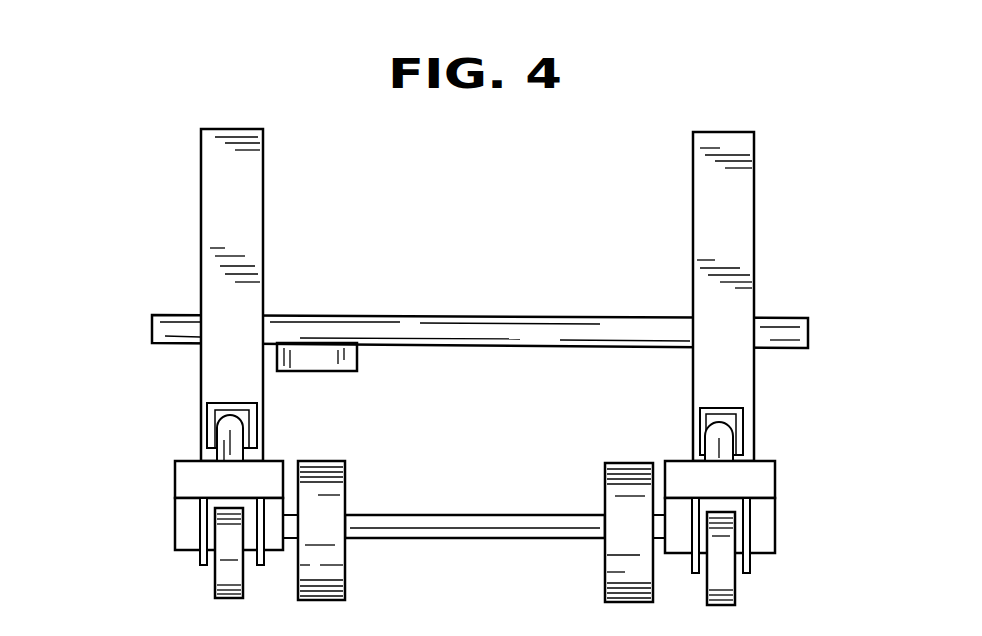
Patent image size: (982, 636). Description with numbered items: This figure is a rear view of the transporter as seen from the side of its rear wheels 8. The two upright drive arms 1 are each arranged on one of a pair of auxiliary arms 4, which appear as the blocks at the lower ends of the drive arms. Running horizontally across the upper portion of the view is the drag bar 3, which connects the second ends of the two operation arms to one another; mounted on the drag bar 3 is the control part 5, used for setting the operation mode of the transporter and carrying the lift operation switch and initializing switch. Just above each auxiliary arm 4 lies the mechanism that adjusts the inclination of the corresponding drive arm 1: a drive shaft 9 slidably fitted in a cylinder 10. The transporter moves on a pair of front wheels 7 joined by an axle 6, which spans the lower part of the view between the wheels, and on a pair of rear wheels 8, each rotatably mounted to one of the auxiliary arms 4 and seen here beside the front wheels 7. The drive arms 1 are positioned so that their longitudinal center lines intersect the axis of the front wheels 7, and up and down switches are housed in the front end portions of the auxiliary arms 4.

The drive arm 1 is at (220, 195).
The drag bar 3 is at (160, 332).
The auxiliary arm 4 is at (186, 485).
The control part 5 is at (295, 360).
The axle 6 is at (500, 535).
The front wheel 7 is at (330, 578).
The rear wheel 8 is at (222, 583).
The drive shaft 9 is at (207, 412).
The cylinder 10 is at (226, 437).